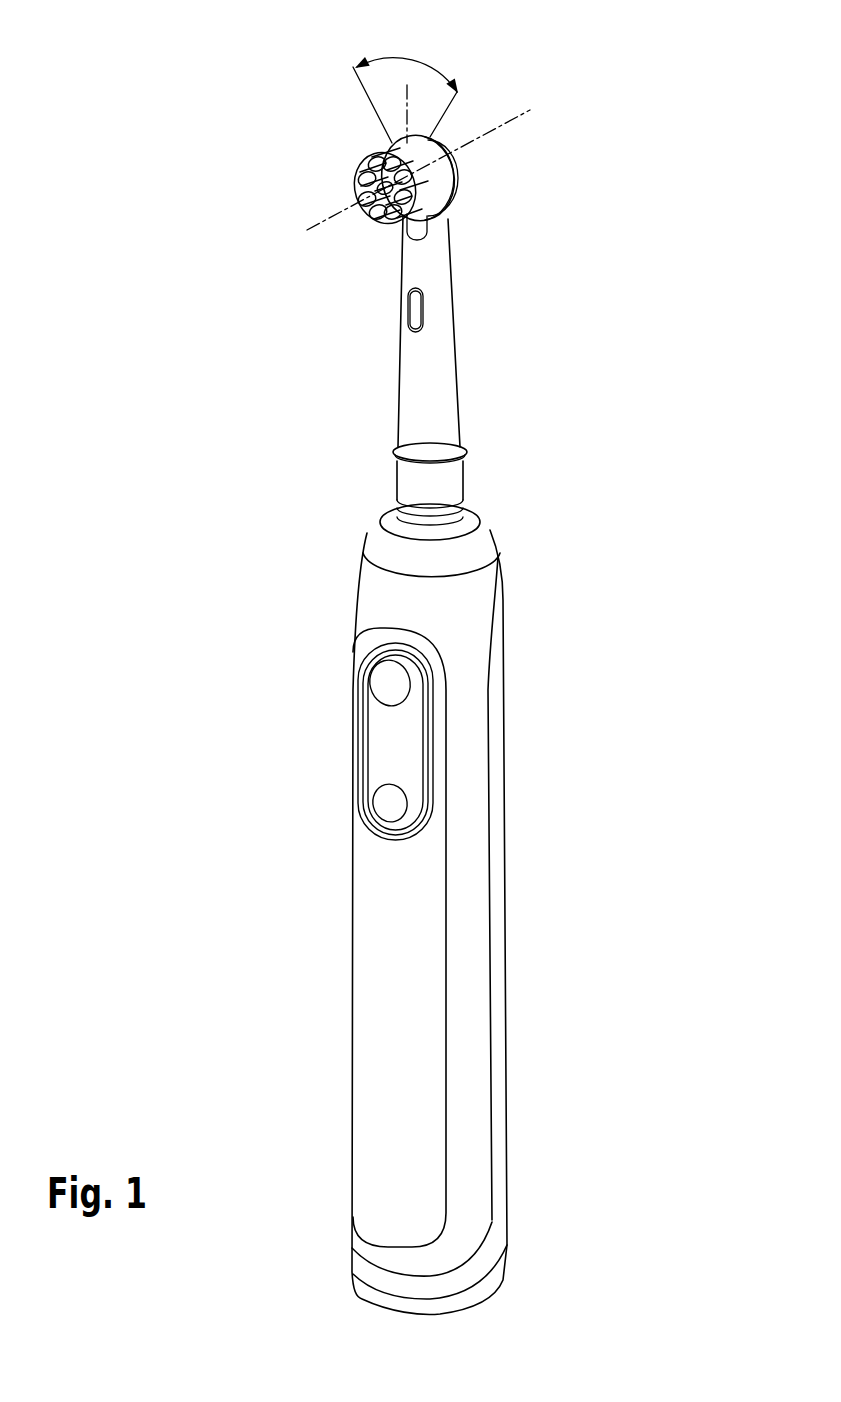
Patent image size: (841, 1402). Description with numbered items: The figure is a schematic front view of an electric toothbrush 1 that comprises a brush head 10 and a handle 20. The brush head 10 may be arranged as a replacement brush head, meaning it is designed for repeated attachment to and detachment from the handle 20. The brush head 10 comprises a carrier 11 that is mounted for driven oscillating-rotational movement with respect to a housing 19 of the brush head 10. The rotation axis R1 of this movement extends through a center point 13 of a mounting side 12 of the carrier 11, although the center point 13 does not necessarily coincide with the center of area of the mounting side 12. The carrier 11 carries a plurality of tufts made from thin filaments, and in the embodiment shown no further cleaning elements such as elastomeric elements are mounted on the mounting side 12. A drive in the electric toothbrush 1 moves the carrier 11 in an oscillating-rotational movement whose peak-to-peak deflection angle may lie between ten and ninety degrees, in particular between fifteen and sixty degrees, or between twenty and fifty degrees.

The electric toothbrush 1 is at (214, 461).
The brush head 10 is at (576, 327).
The carrier 11 is at (437, 167).
The mounting side 12 is at (433, 218).
The center point 13 is at (423, 184).
The housing 19 is at (433, 408).
The handle 20 is at (576, 957).
The rotation axis R1 is at (521, 110).